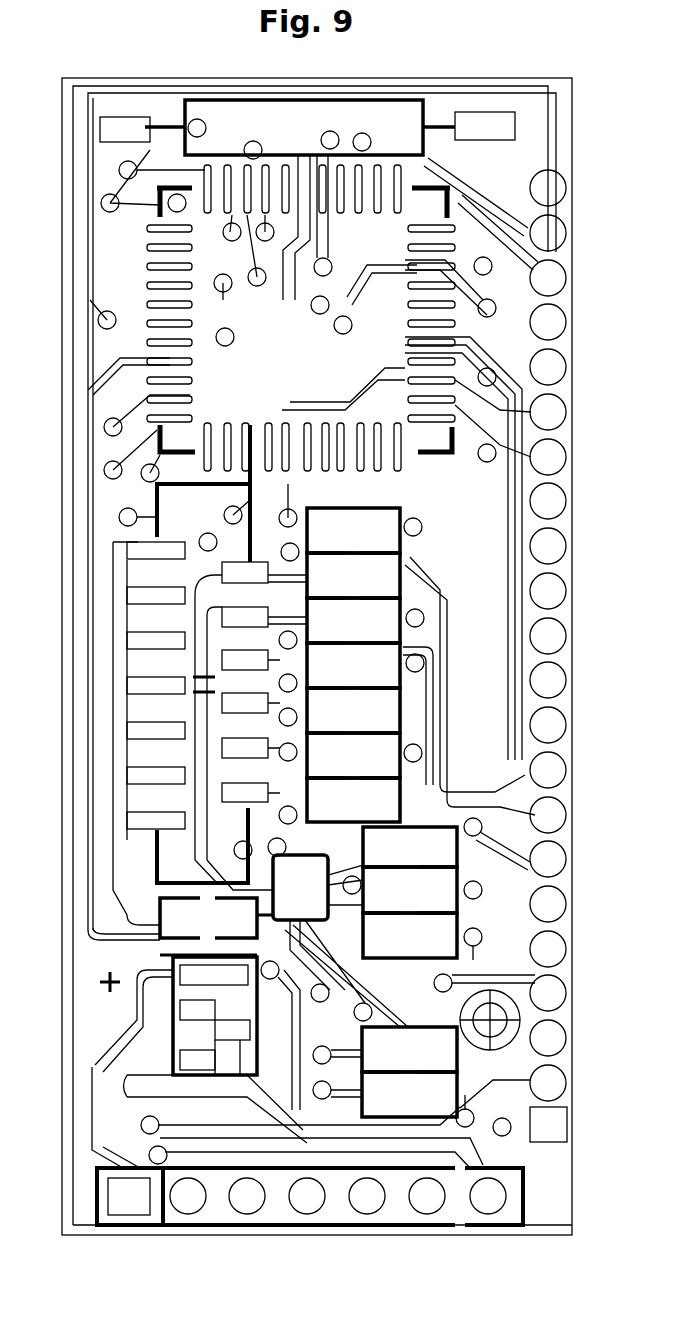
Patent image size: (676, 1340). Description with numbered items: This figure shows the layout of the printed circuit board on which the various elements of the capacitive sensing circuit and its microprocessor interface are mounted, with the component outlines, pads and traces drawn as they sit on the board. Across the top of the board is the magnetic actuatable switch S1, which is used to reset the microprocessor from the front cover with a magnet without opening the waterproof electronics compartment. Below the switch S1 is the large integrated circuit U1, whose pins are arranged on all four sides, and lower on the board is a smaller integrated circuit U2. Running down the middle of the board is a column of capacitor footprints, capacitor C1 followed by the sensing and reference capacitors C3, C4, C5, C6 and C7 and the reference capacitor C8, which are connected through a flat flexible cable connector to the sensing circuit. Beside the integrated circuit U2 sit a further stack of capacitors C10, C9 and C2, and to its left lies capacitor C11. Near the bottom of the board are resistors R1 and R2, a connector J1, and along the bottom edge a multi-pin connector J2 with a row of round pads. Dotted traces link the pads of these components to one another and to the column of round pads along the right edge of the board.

The magnetic actuatable switch S1 is at (307, 129).
The integrated circuit U1 (microcontroller) U1 is at (313, 455).
The integrated circuit U2 is at (321, 932).
The capacitor C1 is at (353, 530).
The capacitor C2 is at (410, 935).
The sensing capacitor C3 is at (353, 575).
The sensing capacitor C4 is at (353, 620).
The sensing capacitor C5 is at (353, 665).
The sensing capacitor C6 is at (353, 710).
The sensing capacitor C7 is at (353, 755).
The reference capacitor C8 is at (353, 800).
The capacitor C9 is at (410, 890).
The capacitor C10 is at (410, 847).
The capacitor C11 is at (216, 926).
The resistor R1 is at (394, 1049).
The resistor R2 is at (431, 1094).
The connector J1 is at (201, 1050).
The connector J2 is at (310, 1174).